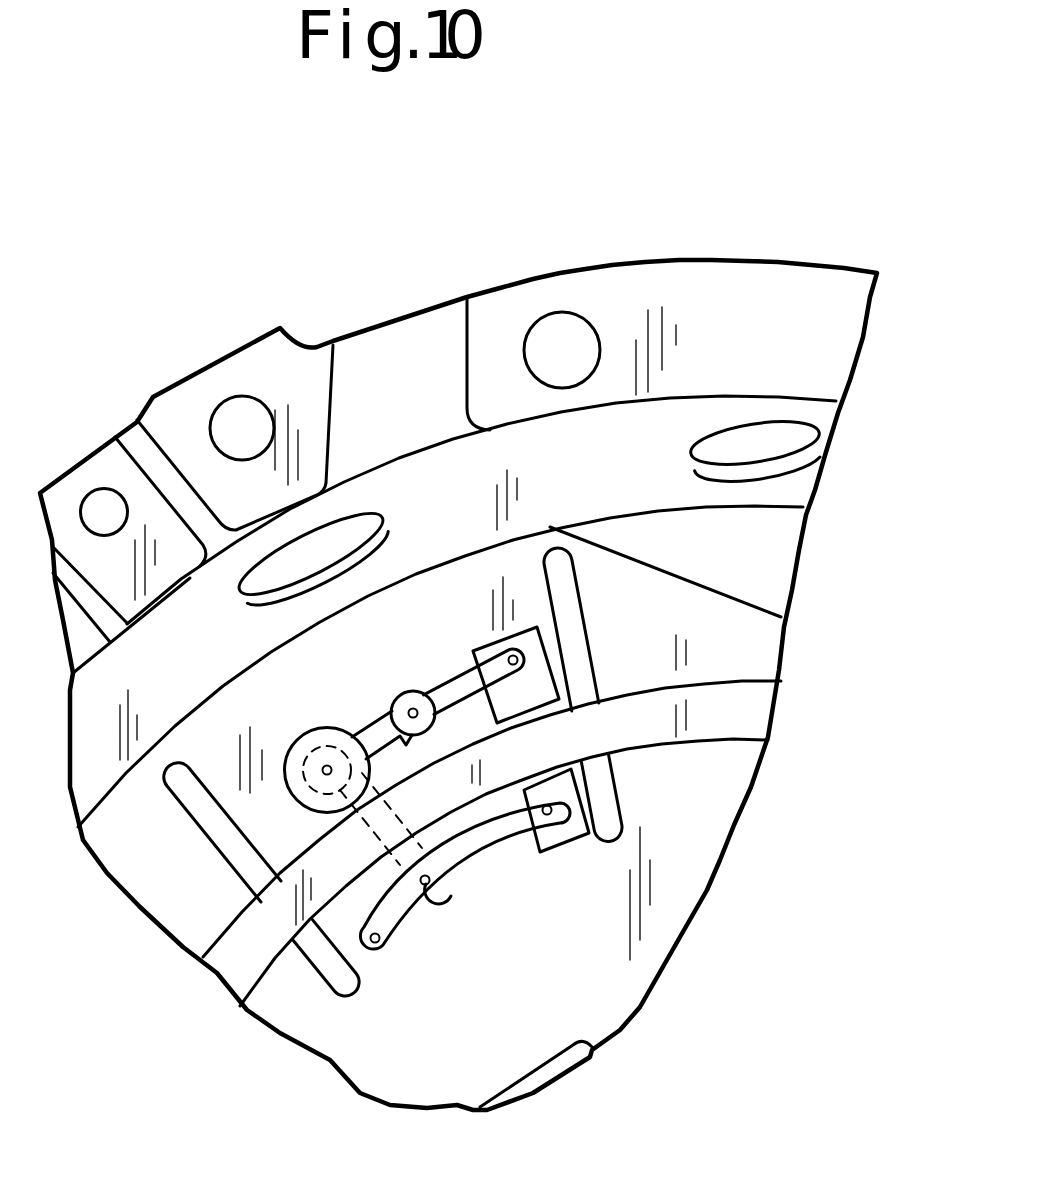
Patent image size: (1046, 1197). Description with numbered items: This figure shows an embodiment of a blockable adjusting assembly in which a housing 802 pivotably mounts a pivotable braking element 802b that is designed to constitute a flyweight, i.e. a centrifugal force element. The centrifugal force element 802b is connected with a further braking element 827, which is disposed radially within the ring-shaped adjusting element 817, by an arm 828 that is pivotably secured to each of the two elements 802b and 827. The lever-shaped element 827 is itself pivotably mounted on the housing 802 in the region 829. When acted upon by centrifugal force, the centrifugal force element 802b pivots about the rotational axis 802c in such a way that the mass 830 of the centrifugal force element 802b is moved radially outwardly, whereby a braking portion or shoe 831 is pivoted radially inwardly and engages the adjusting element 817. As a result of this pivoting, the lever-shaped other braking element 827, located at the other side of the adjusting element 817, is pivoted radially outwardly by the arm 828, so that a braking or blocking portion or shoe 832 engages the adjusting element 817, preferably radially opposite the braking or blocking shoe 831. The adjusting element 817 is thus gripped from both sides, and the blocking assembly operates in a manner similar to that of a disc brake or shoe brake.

The housing 802 is at (753, 297).
The pivotable braking element 802b is at (390, 716).
The rotational axis 802c is at (413, 708).
The ring-shaped adjusting element 817 is at (755, 703).
The further braking element 827 is at (473, 850).
The arm 828 is at (407, 860).
The region 829 is at (371, 947).
The mass 830 is at (303, 793).
The braking shoe 831 is at (543, 678).
The blocking shoe 832 is at (568, 797).